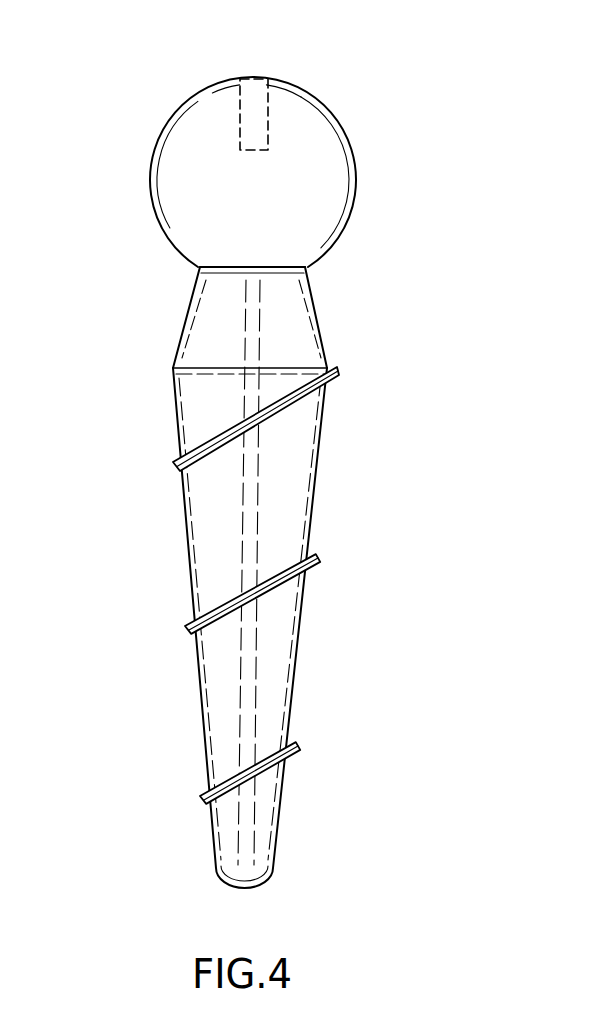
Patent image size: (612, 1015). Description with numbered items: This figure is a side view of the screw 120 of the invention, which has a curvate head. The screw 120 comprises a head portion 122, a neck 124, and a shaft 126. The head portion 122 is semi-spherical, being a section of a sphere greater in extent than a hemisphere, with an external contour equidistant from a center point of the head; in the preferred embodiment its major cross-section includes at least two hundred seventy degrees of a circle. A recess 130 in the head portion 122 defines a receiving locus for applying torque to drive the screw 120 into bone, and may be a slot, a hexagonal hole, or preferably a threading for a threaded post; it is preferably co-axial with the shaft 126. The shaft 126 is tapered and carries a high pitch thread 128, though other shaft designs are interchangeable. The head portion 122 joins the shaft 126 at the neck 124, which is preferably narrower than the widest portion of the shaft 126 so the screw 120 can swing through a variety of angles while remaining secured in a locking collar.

The screw 120 is at (368, 139).
The head portion 122 is at (280, 206).
The neck 124 is at (317, 313).
The shaft 126 is at (313, 543).
The high pitch thread 128 is at (177, 467).
The recess 130 is at (265, 76).